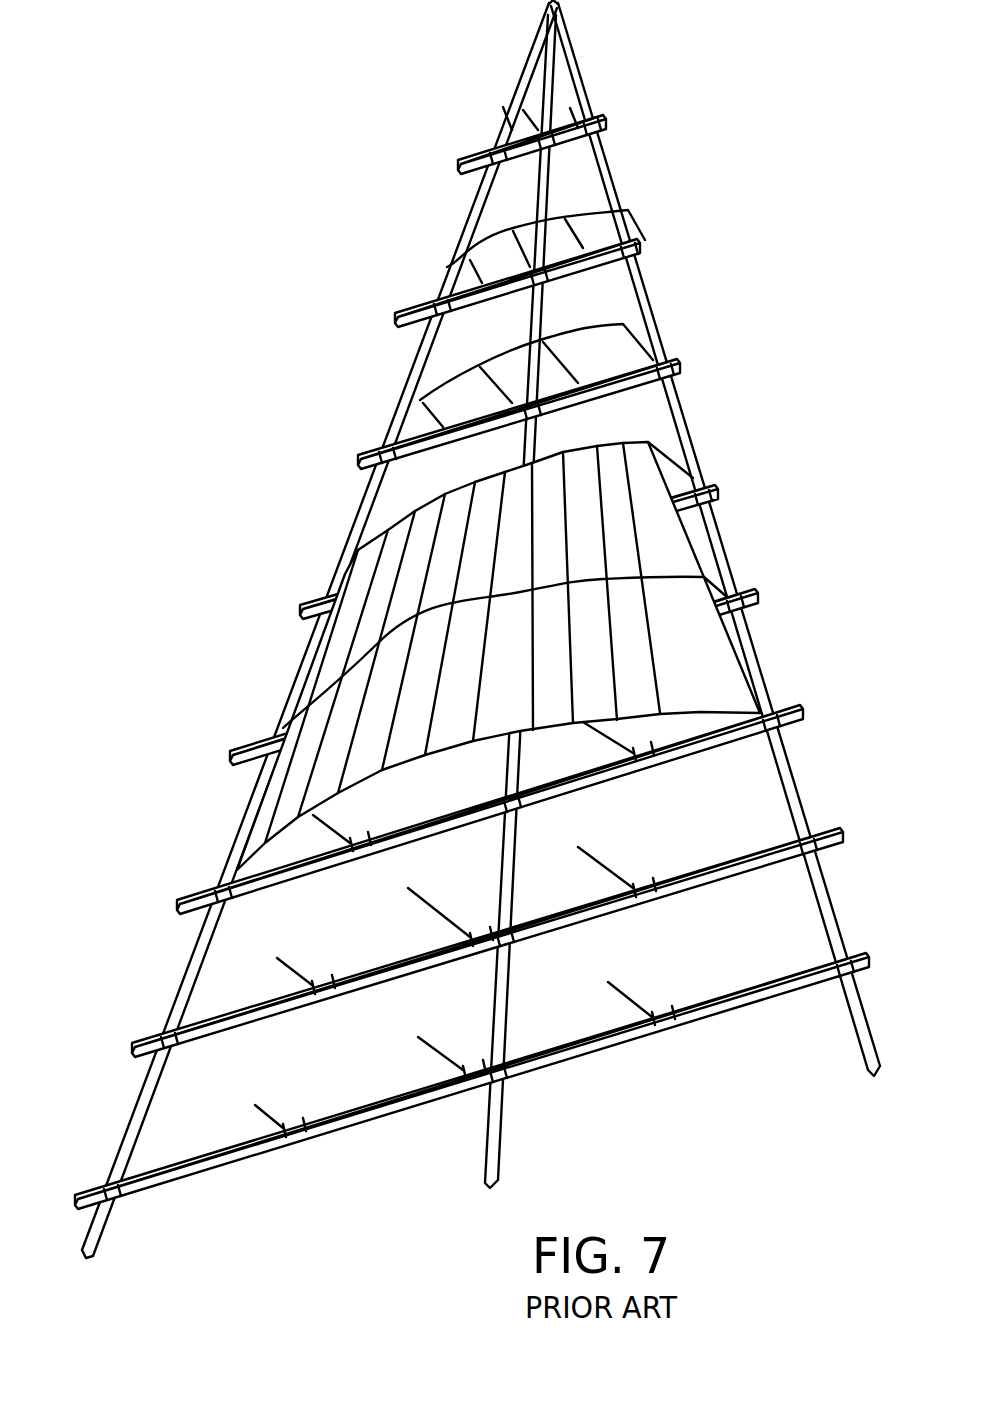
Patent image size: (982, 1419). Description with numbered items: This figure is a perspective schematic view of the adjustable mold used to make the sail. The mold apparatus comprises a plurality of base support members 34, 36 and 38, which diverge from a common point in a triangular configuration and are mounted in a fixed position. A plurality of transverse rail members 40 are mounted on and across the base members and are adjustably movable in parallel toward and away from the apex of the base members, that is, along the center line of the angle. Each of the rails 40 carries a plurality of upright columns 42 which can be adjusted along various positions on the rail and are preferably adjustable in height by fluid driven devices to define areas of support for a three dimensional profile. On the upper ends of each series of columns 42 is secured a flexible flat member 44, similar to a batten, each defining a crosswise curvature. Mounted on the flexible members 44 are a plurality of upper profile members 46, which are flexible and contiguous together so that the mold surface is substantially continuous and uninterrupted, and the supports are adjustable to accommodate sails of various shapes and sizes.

The base support member 34 is at (111, 1214).
The base support member 36 is at (508, 1140).
The base support member 38 is at (854, 1037).
The transverse rail member 40 is at (712, 892).
The upright column 42 is at (606, 851).
The flexible flat member 44 is at (605, 312).
The upper profile member 46 is at (700, 652).